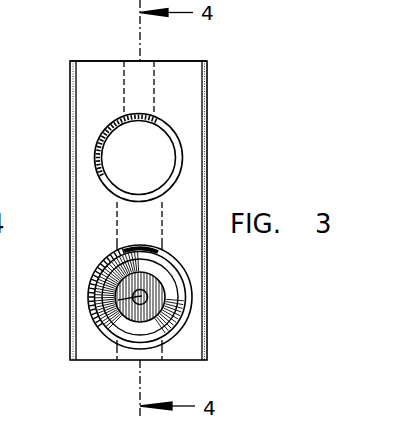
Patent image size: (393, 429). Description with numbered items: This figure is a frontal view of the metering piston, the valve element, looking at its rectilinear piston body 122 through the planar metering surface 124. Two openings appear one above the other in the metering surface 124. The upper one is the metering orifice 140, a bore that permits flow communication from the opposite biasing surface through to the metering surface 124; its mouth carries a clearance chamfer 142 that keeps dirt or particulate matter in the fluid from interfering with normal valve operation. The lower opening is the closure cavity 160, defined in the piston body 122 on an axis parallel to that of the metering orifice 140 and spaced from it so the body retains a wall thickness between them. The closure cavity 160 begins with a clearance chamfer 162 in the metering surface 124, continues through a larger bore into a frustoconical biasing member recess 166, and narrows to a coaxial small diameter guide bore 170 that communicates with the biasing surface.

The piston body 122 is at (70, 94).
The planar metering surface 124 is at (95, 65).
The metering orifice 140 is at (180, 156).
The clearance chamfer 142 is at (168, 120).
The closure cavity 160 is at (91, 287).
The clearance chamfer 162 is at (183, 311).
The biasing member recess 166 is at (176, 283).
The guide bore 170 is at (97, 314).